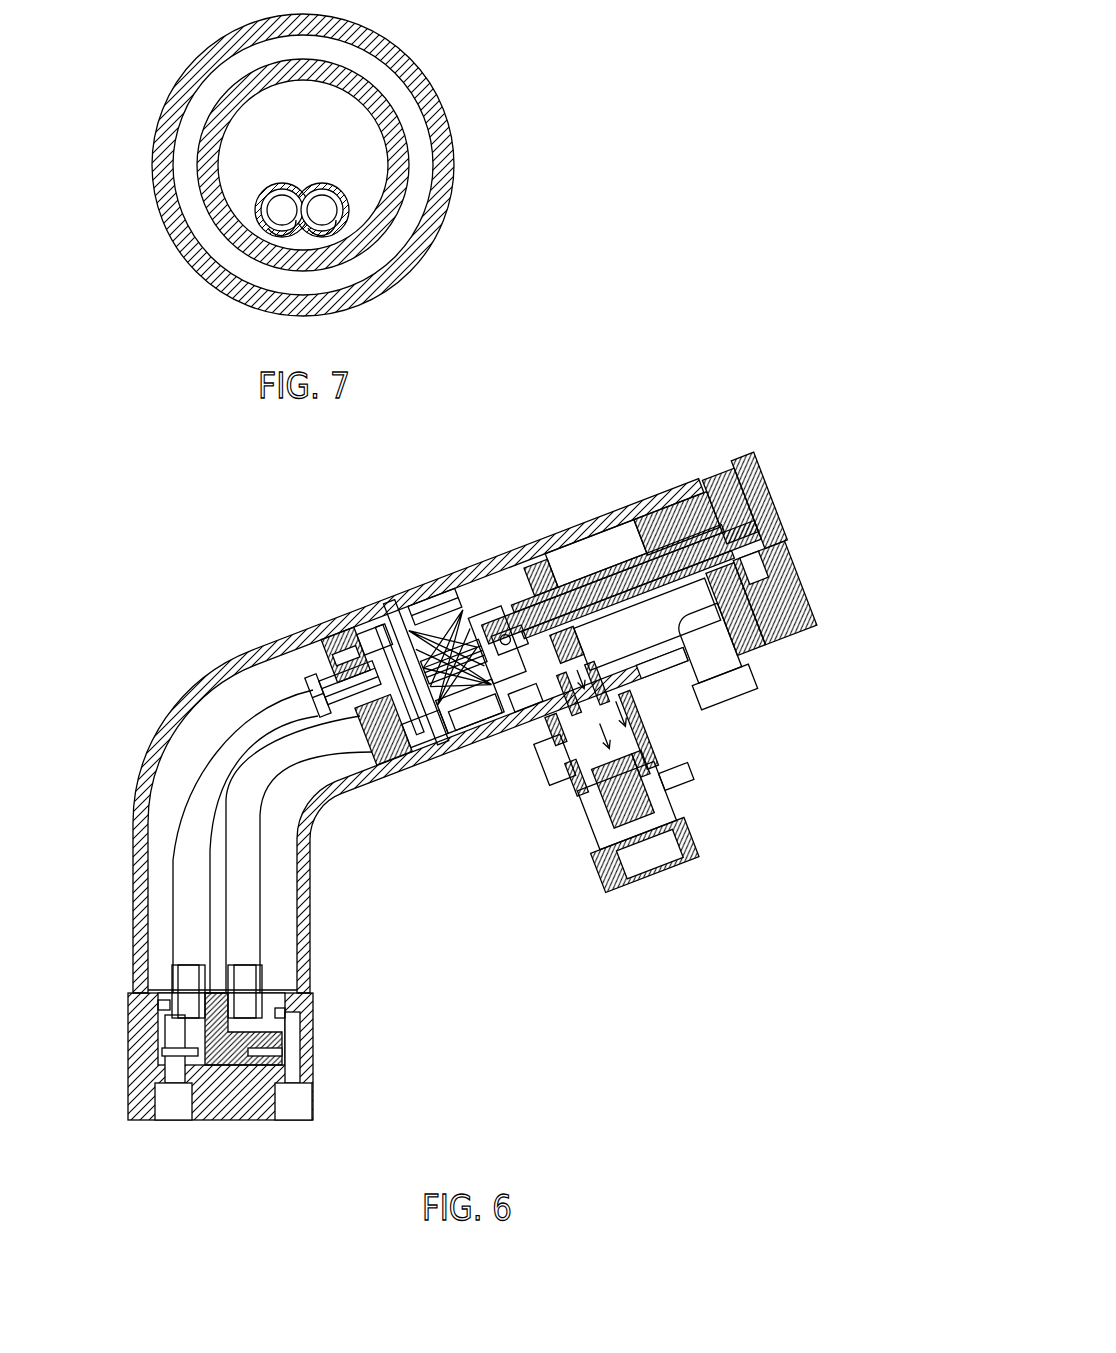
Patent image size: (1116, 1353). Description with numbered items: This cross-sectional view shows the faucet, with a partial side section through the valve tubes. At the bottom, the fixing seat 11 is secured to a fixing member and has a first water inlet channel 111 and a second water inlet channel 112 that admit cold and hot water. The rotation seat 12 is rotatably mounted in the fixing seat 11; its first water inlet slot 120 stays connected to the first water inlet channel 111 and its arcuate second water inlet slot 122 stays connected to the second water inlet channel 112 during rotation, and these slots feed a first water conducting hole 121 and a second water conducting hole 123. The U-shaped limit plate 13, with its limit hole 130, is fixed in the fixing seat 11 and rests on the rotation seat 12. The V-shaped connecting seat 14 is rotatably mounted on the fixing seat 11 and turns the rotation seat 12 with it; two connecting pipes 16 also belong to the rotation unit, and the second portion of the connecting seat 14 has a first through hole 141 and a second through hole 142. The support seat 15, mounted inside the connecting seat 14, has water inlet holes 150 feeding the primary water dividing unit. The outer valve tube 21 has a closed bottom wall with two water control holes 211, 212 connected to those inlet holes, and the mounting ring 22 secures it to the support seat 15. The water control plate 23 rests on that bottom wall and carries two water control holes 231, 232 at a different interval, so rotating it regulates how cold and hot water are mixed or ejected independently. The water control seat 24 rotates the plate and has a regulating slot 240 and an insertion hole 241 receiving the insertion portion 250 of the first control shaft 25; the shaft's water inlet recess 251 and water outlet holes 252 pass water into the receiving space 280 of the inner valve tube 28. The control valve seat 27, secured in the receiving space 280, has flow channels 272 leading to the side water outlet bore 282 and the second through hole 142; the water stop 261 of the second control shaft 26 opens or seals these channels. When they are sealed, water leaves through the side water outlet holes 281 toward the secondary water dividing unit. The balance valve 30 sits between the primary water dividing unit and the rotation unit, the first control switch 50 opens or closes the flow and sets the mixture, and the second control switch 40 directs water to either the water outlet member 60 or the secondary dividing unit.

In FIG. 6, the fixing seat 11 is at (128, 1100).
In FIG. 6, the first water inlet channel 111 is at (170, 1100).
In FIG. 6, the second water inlet channel 112 is at (313, 1108).
In FIG. 6, the rotation seat 12 is at (226, 1062).
In FIG. 6, the first water inlet slot 120 is at (165, 1052).
In FIG. 6, the first water conducting hole 121 is at (160, 1005).
In FIG. 6, the second water inlet slot 122 is at (280, 1025).
In FIG. 6, the second water conducting hole 123 is at (250, 1000).
In FIG. 6, the limit plate 13 is at (287, 980).
In FIG. 6, the limit hole 130 is at (165, 995).
In FIG. 7, the connecting seat 14 is at (447, 135).
In FIG. 6, the connecting seat 14 is at (172, 723).
In FIG. 6, the first through hole 141 is at (547, 790).
In FIG. 6, the second through hole 142 is at (740, 680).
In FIG. 6, the support seat 15 is at (360, 640).
In FIG. 6, the water inlet hole 150 is at (325, 665).
In FIG. 6, the connecting pipes 16 is at (197, 835).
In FIG. 7, the outer valve tube 21 is at (233, 97).
In FIG. 6, the outer valve tube 21 is at (490, 620).
In FIG. 7, the water control hole 211 is at (265, 205).
In FIG. 6, the water control hole 211 is at (460, 730).
In FIG. 7, the water control hole 212 is at (340, 205).
In FIG. 6, the water control hole 212 is at (454, 661).
In FIG. 6, the mounting ring 22 is at (420, 610).
In FIG. 7, the water control plate 23 is at (317, 180).
In FIG. 6, the water control plate 23 is at (398, 667).
In FIG. 7, the water control hole 231 is at (275, 225).
In FIG. 7, the water control hole 232 is at (330, 230).
In FIG. 6, the water control seat 24 is at (487, 743).
In FIG. 6, the regulating slot 240 is at (312, 698).
In FIG. 6, the insertion hole 241 is at (483, 600).
In FIG. 6, the insertion portion 250 is at (435, 607).
In FIG. 6, the water inlet recess 251 is at (317, 695).
In FIG. 6, the water outlet holes 252 is at (432, 740).
In FIG. 6, the first control shaft 25 is at (678, 560).
In FIG. 6, the second control shaft 26 is at (600, 600).
In FIG. 6, the water stop 261 is at (577, 600).
In FIG. 6, the control valve seat 27 is at (697, 657).
In FIG. 6, the flow channels 272 is at (625, 555).
In FIG. 6, the inner valve tube 28 is at (778, 498).
In FIG. 6, the receiving space 280 is at (793, 563).
In FIG. 6, the side water outlet holes 281 is at (633, 693).
In FIG. 6, the side water outlet bore 282 is at (790, 648).
In FIG. 6, the balance valve 30 is at (650, 885).
In FIG. 6, the second control switch 40 is at (703, 478).
In FIG. 6, the first control switch 50 is at (748, 462).
In FIG. 6, the water outlet member 60 is at (757, 657).